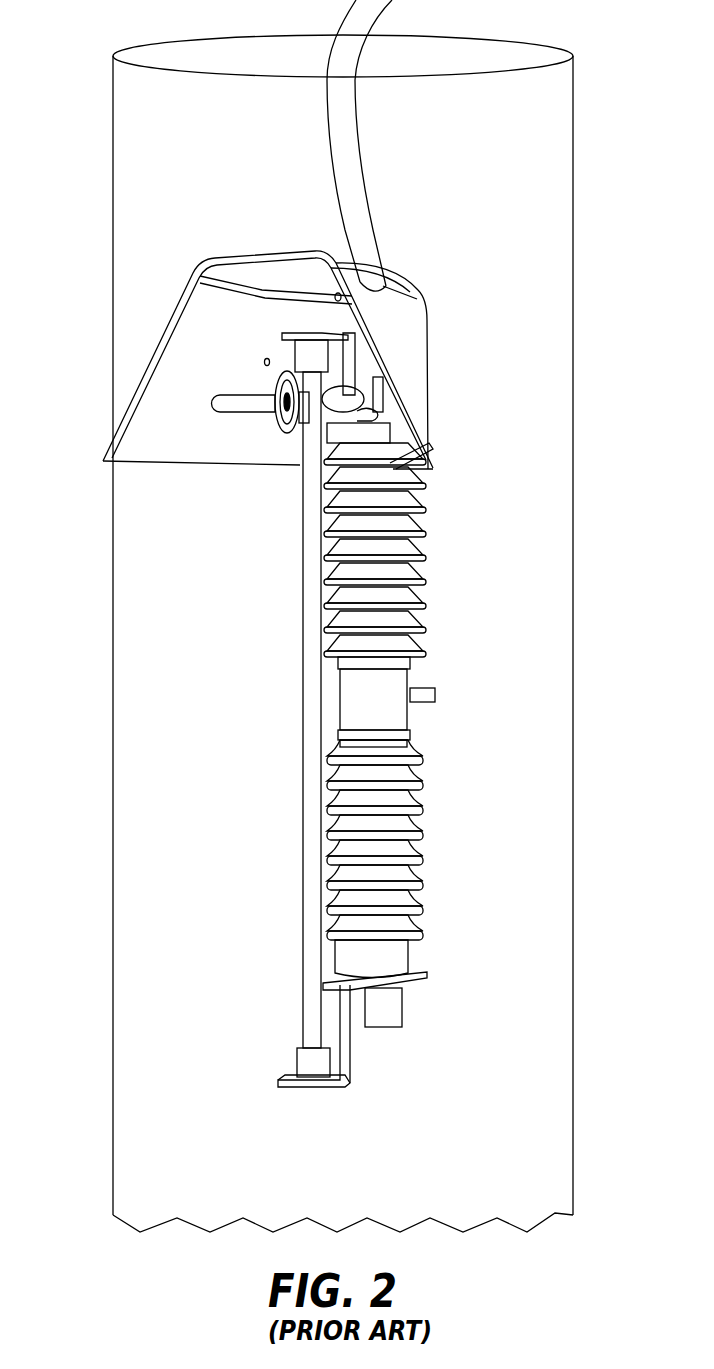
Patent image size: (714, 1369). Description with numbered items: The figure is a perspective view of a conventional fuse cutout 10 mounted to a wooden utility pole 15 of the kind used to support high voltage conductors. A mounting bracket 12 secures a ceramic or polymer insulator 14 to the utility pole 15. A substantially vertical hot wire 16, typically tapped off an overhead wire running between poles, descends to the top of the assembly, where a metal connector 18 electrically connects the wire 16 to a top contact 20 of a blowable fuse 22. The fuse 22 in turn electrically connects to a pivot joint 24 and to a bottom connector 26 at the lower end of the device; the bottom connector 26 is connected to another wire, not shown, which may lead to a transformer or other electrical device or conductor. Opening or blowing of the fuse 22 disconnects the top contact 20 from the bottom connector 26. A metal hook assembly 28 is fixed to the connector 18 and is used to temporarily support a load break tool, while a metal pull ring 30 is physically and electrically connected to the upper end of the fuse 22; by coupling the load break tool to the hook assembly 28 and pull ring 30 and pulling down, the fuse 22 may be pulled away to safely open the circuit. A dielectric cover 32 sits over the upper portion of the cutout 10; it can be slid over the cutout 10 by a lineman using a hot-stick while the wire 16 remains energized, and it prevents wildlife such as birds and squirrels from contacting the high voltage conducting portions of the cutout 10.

The fuse cutout 10 is at (280, 818).
The mounting bracket 12 is at (436, 702).
The insulator 14 is at (417, 570).
The utility pole 15 is at (133, 110).
The wire 16 is at (357, 141).
The connector 18 is at (384, 393).
The top contact 20 is at (282, 334).
The fuse 22 is at (308, 773).
The pivot joint 24 is at (310, 1066).
The bottom connector 26 is at (404, 1006).
The hook assembly 28 is at (247, 395).
The pull ring 30 is at (274, 421).
The dielectric cover 32 is at (283, 256).